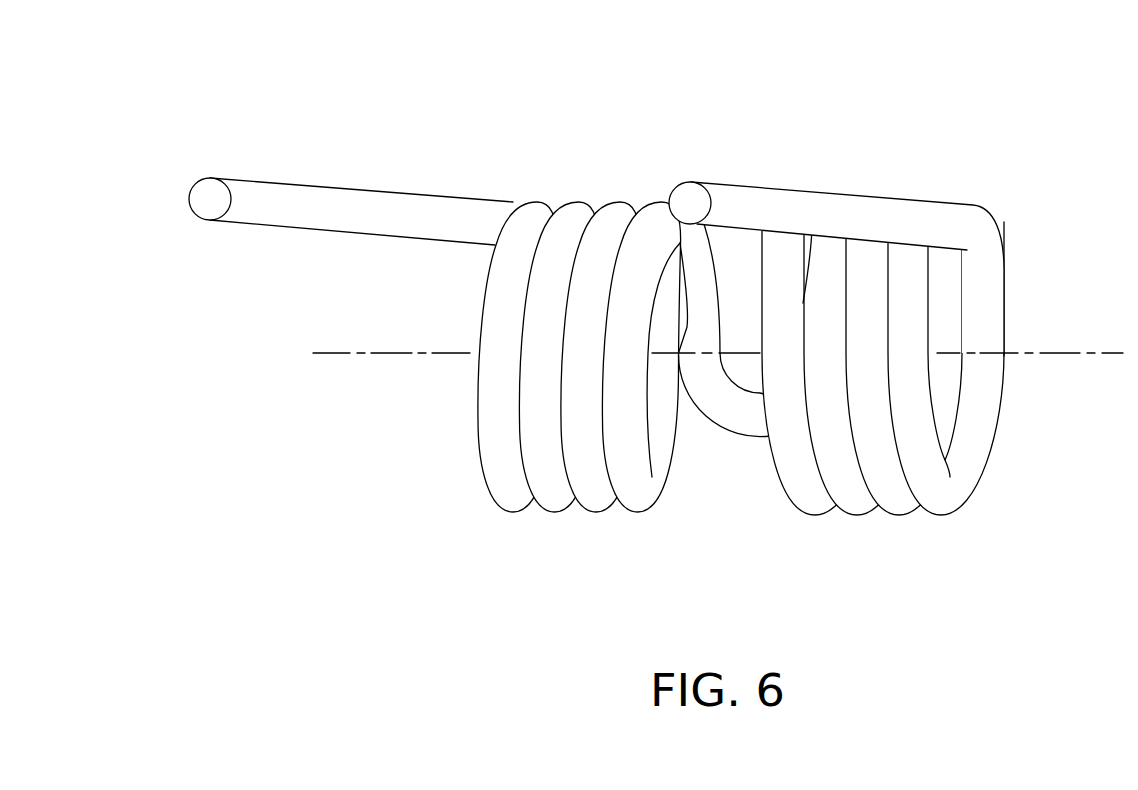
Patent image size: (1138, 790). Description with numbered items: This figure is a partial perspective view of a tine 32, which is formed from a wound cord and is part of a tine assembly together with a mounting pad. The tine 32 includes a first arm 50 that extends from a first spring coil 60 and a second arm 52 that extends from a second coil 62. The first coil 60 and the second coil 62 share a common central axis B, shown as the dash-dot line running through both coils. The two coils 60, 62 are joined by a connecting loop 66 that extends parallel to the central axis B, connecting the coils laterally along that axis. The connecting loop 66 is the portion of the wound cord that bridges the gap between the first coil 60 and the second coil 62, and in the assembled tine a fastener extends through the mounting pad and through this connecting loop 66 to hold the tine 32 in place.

The tine 32 is at (656, 296).
The first arm 50 is at (287, 198).
The second arm 52 is at (830, 207).
The first spring coil 60 is at (497, 428).
The second coil 62 is at (976, 483).
The connecting loop 66 is at (738, 423).
The central axis B is at (340, 352).